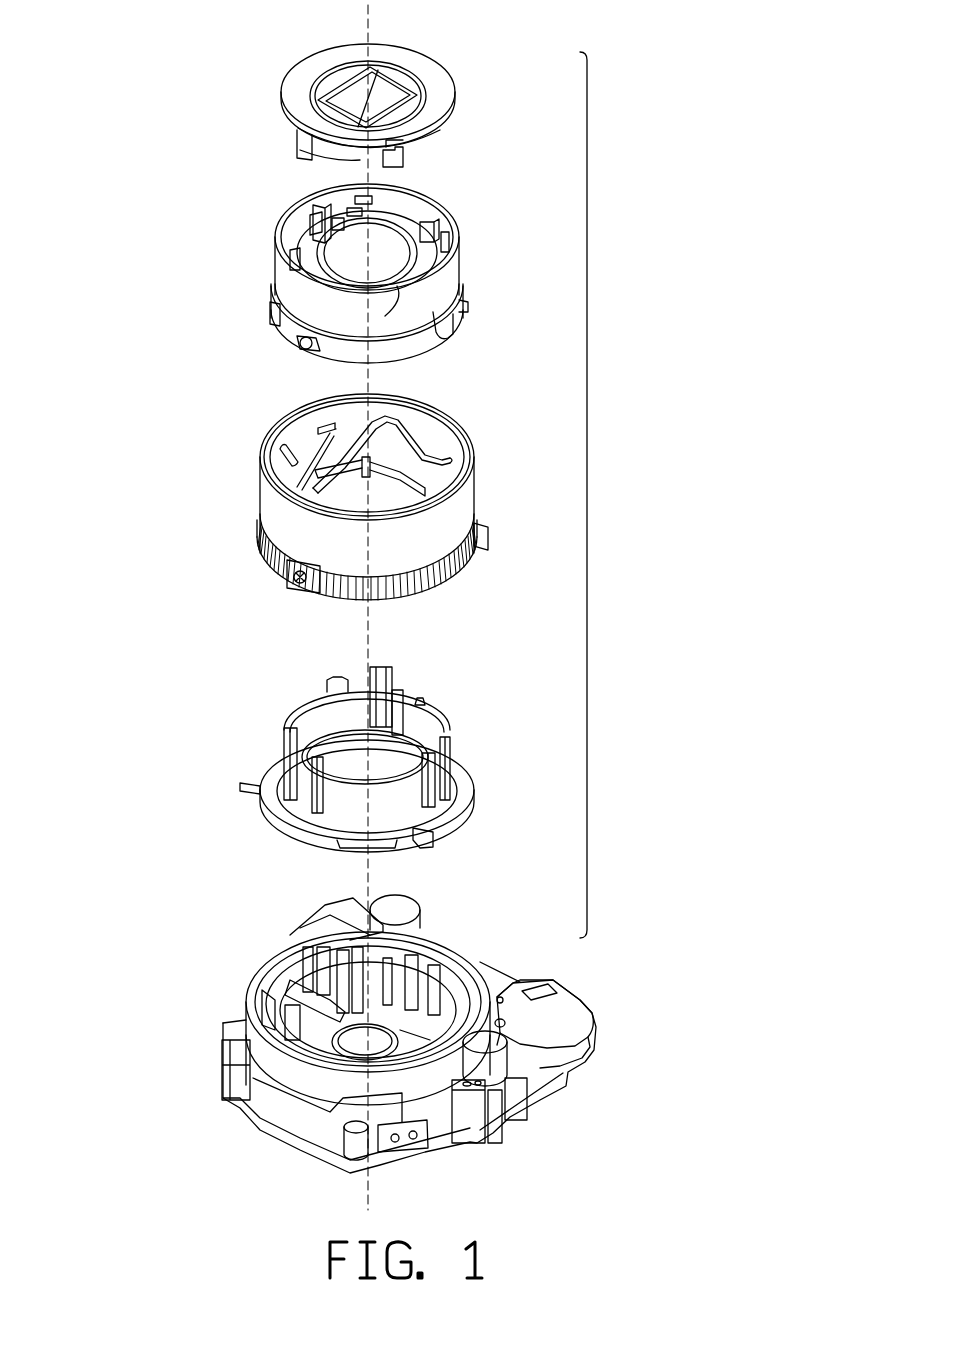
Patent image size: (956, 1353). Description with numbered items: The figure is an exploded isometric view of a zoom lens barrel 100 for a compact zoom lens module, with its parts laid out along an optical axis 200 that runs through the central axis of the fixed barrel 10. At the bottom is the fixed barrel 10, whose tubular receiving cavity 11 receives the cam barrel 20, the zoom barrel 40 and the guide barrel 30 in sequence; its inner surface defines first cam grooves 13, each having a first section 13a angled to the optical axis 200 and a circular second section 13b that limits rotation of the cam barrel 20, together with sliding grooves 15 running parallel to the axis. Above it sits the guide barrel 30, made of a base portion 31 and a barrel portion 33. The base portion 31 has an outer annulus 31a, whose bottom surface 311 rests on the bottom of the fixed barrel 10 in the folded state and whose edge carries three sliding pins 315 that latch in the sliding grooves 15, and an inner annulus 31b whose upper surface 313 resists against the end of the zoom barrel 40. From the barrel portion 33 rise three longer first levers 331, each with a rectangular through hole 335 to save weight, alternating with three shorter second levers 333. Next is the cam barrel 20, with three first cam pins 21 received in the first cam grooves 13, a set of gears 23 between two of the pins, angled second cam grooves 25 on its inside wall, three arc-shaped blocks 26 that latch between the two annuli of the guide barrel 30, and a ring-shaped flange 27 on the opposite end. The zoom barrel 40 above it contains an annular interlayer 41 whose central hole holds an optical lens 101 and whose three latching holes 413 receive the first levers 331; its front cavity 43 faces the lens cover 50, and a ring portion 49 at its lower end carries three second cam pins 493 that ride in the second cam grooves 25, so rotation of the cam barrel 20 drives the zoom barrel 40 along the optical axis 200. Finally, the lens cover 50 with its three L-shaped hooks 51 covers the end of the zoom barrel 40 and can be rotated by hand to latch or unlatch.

The zoom lens barrel 100 is at (587, 493).
The optical axis 200 is at (372, 33).
The lens cover 50 is at (440, 103).
The L-shaped hooks 51 is at (397, 160).
The zoom barrel 40 is at (447, 290).
The annular interlayer 41 is at (397, 288).
The front cavity 43 is at (313, 220).
The latching holes 413 is at (362, 197).
The optical lens 101 is at (353, 253).
The ring portion 49 is at (290, 325).
The second cam pins 493 is at (303, 343).
The cam barrel 20 is at (468, 447).
The first cam pins 21 is at (484, 527).
The gears 23 is at (458, 577).
The second cam grooves 25 is at (410, 423).
The arc-shaped blocks 26 is at (410, 480).
The ring-shaped flange 27 is at (290, 417).
The guide barrel 30 is at (455, 709).
The base portion 31 is at (148, 810).
The outer annulus 31a is at (290, 835).
The inner annulus 31b is at (283, 806).
The bottom surface 311 is at (430, 832).
The upper surface 313 is at (460, 780).
The sliding pins 315 is at (248, 782).
The barrel portion 33 is at (290, 740).
The first levers 331 is at (384, 670).
The second levers 333 is at (337, 680).
The rectangular through hole 335 is at (395, 690).
The fixed barrel 10 is at (483, 940).
The tubular receiving cavity 11 is at (414, 1037).
The first cam grooves 13 is at (148, 925).
The first section 13a is at (290, 980).
The second section 13b is at (262, 990).
The sliding grooves 15 is at (425, 950).